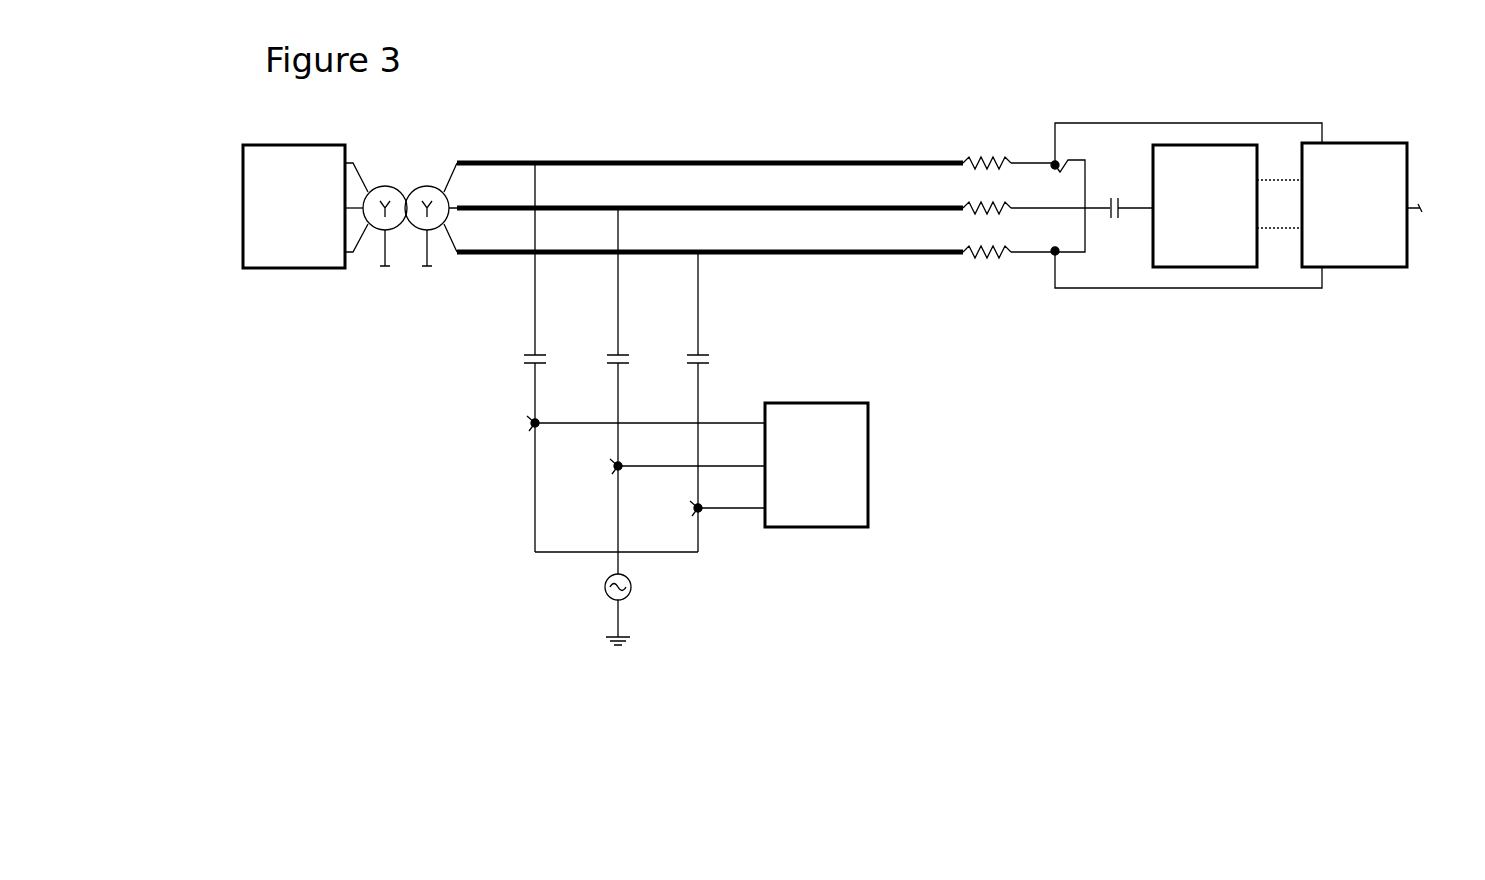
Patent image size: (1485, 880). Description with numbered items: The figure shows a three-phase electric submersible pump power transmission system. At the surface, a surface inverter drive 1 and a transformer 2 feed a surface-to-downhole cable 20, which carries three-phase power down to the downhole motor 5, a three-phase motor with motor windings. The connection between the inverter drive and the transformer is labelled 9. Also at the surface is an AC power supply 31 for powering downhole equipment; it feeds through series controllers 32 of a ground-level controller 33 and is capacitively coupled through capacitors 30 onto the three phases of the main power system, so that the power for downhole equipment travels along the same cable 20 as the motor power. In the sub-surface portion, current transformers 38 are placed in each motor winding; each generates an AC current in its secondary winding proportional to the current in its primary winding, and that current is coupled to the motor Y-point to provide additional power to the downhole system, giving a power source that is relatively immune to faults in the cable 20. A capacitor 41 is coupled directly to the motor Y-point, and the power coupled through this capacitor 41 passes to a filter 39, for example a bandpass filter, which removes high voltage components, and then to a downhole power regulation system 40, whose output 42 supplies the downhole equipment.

The surface inverter drive 1 is at (243, 226).
The transformer 2 is at (428, 180).
The downhole motor 5 is at (982, 145).
The inverter output connections 9 is at (359, 201).
The surface-to-downhole cable 20 is at (788, 160).
The capacitors 30 is at (513, 355).
The AC power supply 31 is at (602, 597).
The series controllers 32 is at (700, 510).
The ground-level controller 33 is at (838, 527).
The current transformers 38 is at (1070, 155).
The filter 39 is at (1205, 147).
The downhole power regulation system 40 is at (1335, 144).
The capacitor 41 is at (1112, 220).
The output connection 42 is at (1420, 208).